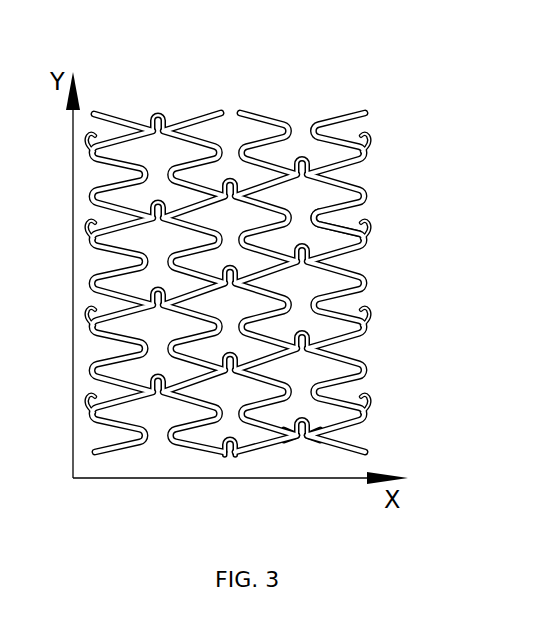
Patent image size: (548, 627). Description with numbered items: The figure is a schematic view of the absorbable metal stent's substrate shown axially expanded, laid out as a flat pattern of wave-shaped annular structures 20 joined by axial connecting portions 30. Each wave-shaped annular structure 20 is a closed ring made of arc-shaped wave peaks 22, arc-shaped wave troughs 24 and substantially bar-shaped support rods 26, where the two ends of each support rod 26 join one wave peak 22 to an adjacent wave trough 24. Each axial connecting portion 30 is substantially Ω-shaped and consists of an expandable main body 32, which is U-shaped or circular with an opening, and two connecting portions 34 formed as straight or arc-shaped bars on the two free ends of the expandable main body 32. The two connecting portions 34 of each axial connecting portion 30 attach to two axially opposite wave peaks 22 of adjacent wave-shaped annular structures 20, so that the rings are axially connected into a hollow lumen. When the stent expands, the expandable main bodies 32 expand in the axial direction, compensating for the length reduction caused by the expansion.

The wave-shaped annular structure 20 is at (345, 117).
The wave peak 22 is at (373, 228).
The wave trough 24 is at (366, 191).
The support rod 26 is at (358, 207).
The axial connecting portion 30 is at (157, 112).
The expandable main body 32 is at (309, 426).
The connecting portion 34 is at (311, 434).